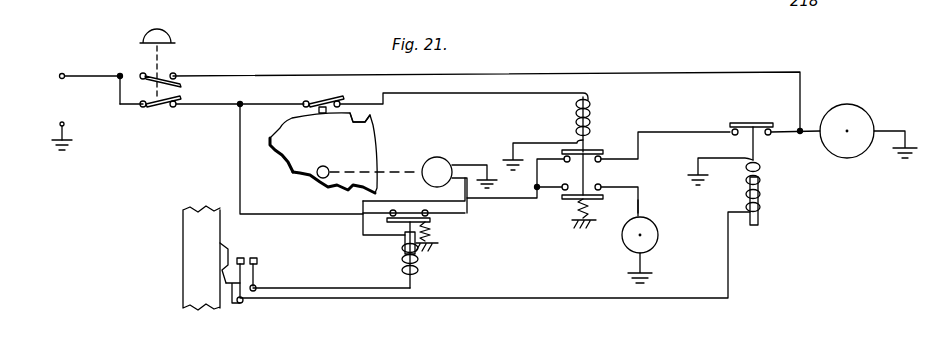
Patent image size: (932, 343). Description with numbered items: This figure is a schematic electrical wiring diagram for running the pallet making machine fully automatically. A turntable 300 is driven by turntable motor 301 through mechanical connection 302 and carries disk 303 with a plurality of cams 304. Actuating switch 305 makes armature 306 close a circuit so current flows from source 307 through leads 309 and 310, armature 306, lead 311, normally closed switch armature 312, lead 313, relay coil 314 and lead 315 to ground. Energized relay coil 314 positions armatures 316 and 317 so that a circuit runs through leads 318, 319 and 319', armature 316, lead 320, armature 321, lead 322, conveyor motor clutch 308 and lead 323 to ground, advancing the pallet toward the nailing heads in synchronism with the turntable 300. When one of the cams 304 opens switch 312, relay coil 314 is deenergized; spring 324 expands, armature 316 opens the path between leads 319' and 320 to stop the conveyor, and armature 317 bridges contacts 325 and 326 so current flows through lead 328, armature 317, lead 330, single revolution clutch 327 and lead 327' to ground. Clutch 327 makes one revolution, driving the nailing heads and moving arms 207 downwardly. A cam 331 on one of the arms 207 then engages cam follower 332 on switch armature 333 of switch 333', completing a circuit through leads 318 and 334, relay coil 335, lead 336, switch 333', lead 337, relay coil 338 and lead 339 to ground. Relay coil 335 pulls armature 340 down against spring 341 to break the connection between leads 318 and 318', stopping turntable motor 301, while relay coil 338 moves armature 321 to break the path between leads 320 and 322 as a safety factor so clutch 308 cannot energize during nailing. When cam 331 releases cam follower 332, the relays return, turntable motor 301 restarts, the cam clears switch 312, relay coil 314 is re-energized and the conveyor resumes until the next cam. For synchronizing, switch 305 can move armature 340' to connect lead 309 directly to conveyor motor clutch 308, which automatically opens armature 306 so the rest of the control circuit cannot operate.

The arms 207 is at (186, 230).
The turntable 300 is at (282, 162).
The turntable motor 301 is at (448, 156).
The mechanical connection 302 is at (394, 166).
The disk 303 is at (278, 127).
The cams 304 is at (370, 123).
The switch 305 is at (166, 32).
The armature 306 is at (160, 108).
The source 307 is at (61, 105).
The conveyor motor clutch 308 is at (862, 106).
The lead 309 is at (90, 76).
The lead 310 is at (124, 106).
The lead 311 is at (235, 98).
The normally closed switch armature 312 is at (318, 88).
The lead 313 is at (493, 100).
The relay coil 314 is at (592, 117).
The lead 315 is at (546, 142).
The armature 316 is at (604, 150).
The armature 317 is at (606, 197).
The lead 318 is at (301, 159).
The lead 318' is at (482, 200).
The lead 319 is at (502, 213).
The lead 319' is at (521, 185).
The lead 320 is at (672, 130).
The armature 321 is at (750, 120).
The lead 322 is at (800, 134).
The lead 323 is at (891, 128).
The spring 324 is at (578, 223).
The contact 325 is at (570, 176).
The contact 326 is at (608, 187).
The single revolution clutch 327 is at (661, 232).
The lead 327' is at (664, 265).
The lead 328 is at (566, 198).
The lead 330 is at (638, 202).
The cam 331 is at (228, 250).
The cam follower 332 is at (244, 303).
The switch armature 333 is at (280, 274).
The switch 333' is at (275, 271).
The lead 334 is at (386, 238).
The relay coil 335 is at (423, 268).
The lead 336 is at (348, 288).
The lead 337 is at (538, 296).
The relay coil 338 is at (764, 195).
The lead 339 is at (720, 158).
The armature 340 is at (414, 200).
The armature 340' is at (175, 64).
The spring 341 is at (436, 236).